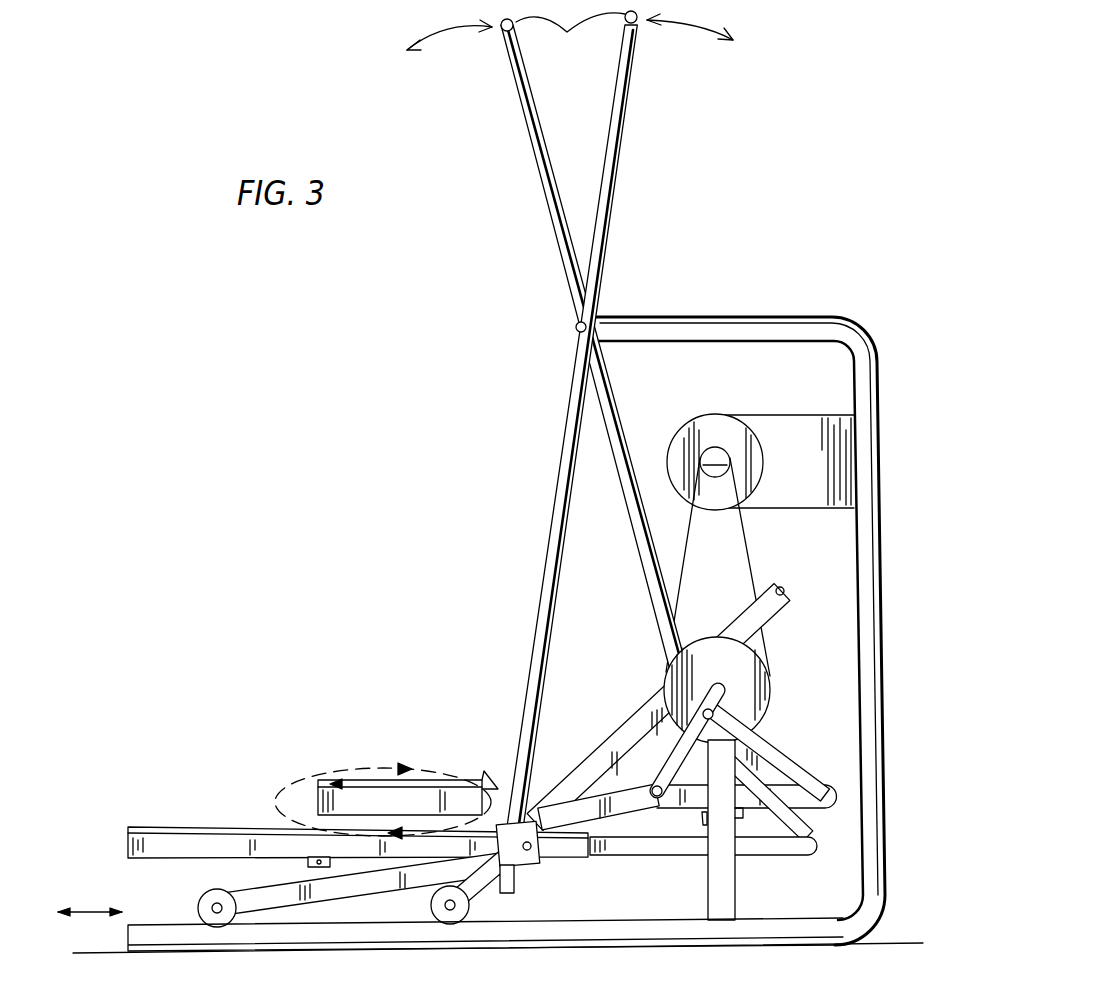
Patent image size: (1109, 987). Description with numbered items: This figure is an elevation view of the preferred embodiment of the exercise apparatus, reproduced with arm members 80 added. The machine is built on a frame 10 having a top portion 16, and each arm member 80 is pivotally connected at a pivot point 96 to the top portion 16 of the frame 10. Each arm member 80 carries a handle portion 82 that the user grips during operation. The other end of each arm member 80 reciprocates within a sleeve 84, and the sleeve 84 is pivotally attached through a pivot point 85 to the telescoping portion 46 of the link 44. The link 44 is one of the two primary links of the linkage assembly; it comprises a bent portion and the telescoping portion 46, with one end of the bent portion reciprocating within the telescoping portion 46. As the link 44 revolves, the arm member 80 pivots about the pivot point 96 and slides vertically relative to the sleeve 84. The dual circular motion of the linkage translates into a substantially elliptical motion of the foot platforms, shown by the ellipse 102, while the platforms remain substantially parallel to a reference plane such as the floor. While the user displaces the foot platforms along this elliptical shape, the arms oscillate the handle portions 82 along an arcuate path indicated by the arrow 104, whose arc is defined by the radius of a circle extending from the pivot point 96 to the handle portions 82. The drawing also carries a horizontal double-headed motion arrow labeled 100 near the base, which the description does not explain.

The frame 10 is at (501, 499).
The top portion 16 is at (683, 318).
The link 44 is at (778, 852).
The telescoping portion 46 is at (454, 848).
The arm member 80 is at (607, 433).
The handle portion 82 is at (569, 38).
The sleeve 84 is at (705, 825).
The pivot point 85 is at (532, 847).
The pivot point 96 is at (575, 322).
The horizontal stride motion 100 is at (93, 910).
The ellipse 102 is at (305, 792).
The arrow 104 is at (442, 37).